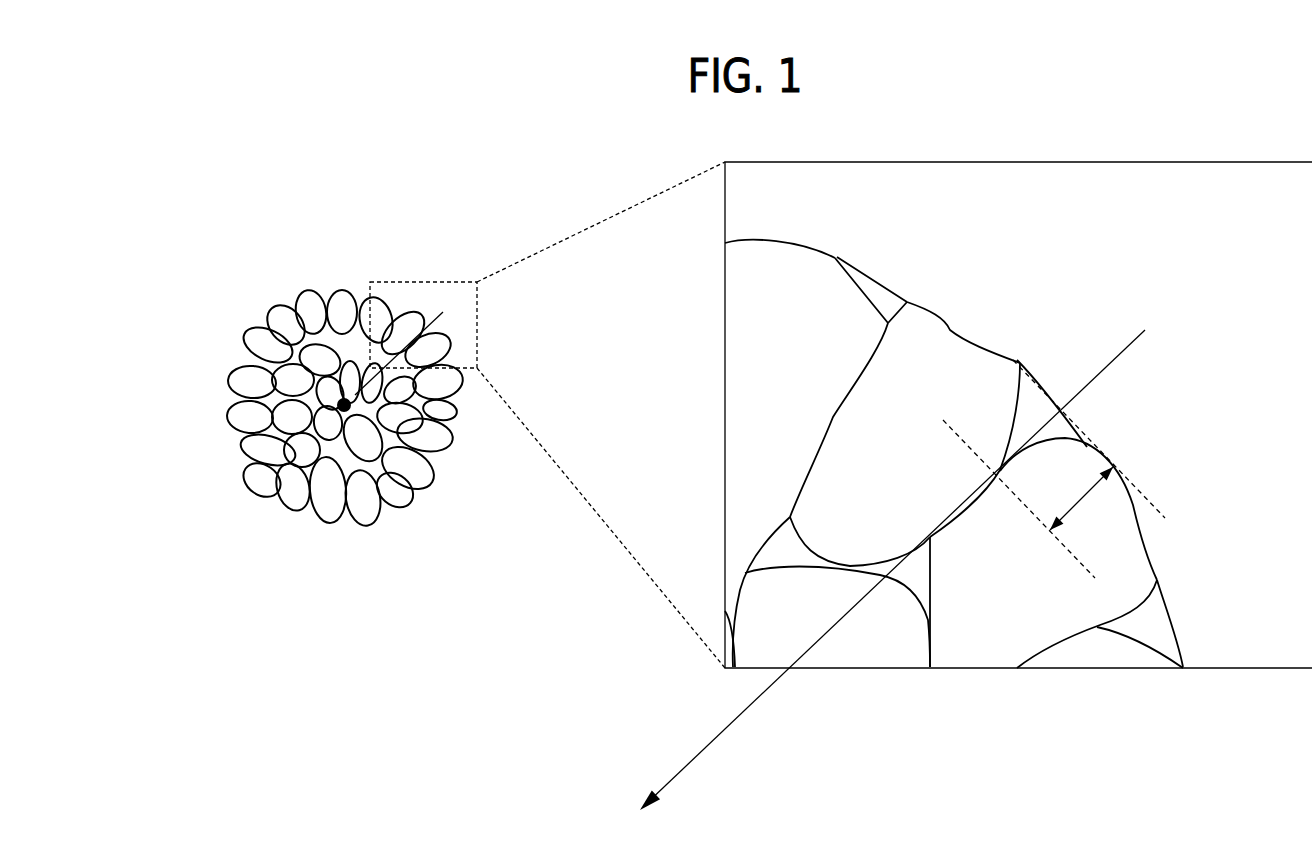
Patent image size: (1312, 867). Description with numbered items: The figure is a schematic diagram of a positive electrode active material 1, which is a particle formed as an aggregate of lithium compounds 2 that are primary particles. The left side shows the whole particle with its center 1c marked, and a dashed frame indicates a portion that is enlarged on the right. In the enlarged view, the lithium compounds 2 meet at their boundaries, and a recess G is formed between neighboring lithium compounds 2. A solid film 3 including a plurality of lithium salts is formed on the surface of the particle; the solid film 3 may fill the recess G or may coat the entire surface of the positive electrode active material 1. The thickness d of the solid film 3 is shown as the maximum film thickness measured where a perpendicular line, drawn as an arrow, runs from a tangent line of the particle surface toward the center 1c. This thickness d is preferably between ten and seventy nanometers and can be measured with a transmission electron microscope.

The positive electrode active material 1 is at (328, 258).
The center of the positive electrode active material 1c is at (349, 412).
The lithium compound 2 is at (327, 500).
The solid film 3 is at (885, 290).
The recess G is at (263, 322).
The thickness d is at (1054, 469).